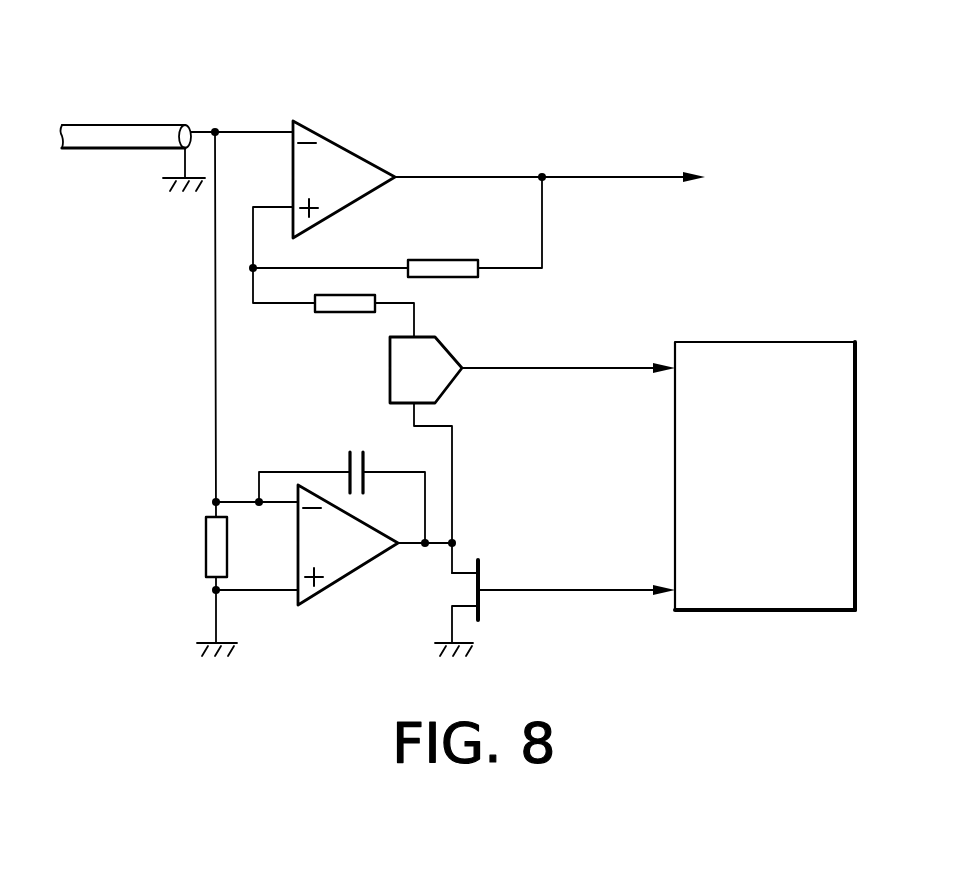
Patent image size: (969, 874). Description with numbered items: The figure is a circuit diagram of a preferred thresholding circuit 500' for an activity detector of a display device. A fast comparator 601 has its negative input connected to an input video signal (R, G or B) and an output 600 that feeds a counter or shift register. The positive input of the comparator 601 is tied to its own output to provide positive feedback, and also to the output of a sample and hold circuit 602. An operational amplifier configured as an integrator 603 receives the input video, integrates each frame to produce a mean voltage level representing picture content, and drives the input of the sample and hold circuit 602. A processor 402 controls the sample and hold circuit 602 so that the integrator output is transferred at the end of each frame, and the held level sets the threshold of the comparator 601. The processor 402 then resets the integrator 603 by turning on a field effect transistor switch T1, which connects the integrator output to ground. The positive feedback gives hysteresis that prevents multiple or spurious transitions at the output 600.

The thresholding circuit 500' is at (458, 379).
The fast comparator 601 is at (375, 160).
The output 600 is at (648, 172).
The sample and hold circuit 602 is at (445, 346).
The processor 402 is at (785, 613).
The integrator 603 is at (322, 596).
The field effect transistor switch T1 is at (555, 597).